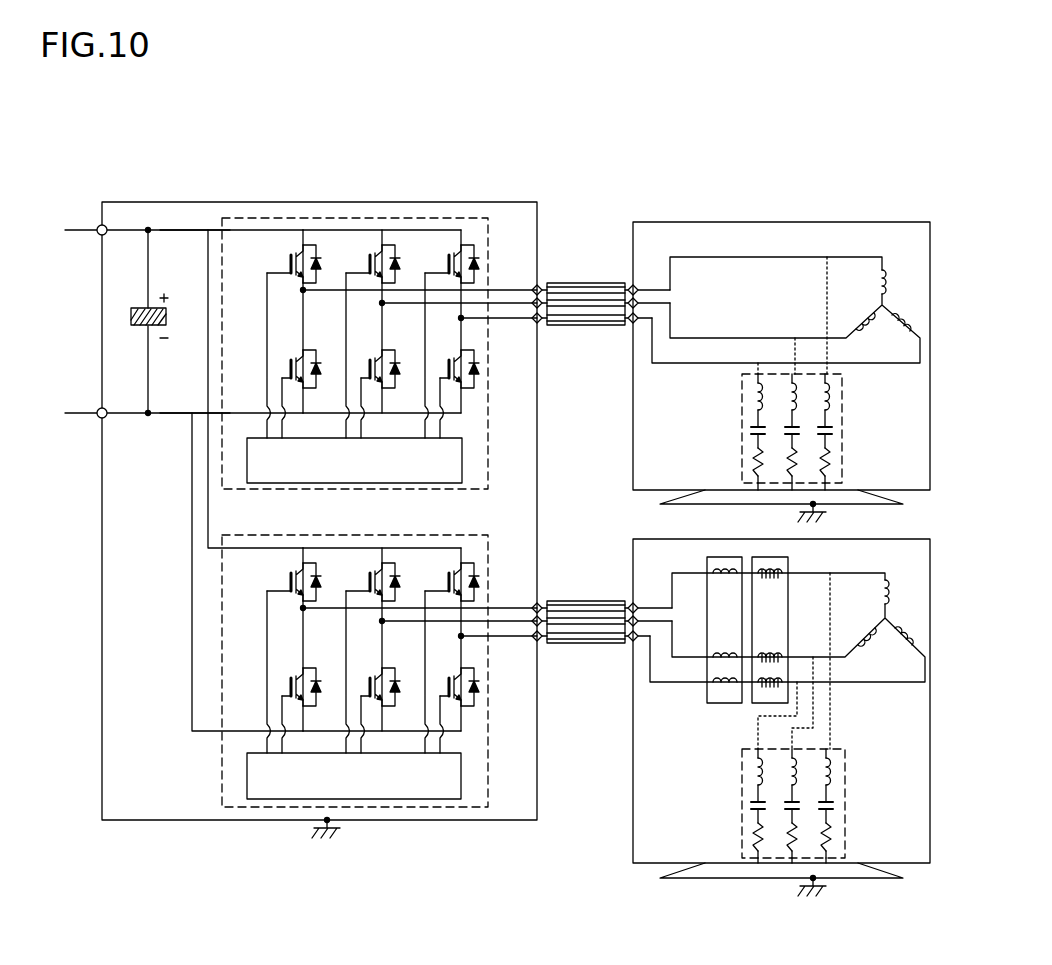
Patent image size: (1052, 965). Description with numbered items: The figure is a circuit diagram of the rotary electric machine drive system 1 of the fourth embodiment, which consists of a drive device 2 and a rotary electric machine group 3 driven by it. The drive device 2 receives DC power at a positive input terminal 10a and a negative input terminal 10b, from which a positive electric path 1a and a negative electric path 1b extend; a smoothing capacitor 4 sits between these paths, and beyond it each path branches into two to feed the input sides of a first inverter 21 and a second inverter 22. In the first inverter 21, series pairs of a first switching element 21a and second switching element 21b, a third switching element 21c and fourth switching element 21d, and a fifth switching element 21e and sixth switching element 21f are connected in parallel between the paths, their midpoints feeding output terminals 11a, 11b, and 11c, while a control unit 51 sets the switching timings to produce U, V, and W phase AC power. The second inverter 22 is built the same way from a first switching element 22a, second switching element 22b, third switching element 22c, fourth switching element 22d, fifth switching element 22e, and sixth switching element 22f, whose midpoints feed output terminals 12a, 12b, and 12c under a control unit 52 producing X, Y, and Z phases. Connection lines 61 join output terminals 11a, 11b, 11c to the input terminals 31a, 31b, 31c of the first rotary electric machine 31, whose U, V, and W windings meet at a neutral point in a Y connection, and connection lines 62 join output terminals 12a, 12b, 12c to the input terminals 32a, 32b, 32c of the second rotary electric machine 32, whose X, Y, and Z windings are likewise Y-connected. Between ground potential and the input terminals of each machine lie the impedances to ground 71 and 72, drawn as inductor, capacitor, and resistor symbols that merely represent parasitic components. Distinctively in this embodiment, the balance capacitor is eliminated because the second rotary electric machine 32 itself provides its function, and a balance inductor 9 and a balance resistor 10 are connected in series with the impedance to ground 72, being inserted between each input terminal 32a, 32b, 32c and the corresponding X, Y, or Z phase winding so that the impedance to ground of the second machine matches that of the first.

The rotary electric machine drive system 1 is at (625, 186).
The positive electric path 1a is at (195, 232).
The negative electric path 1b is at (176, 415).
The drive device 2 is at (494, 202).
The rotary electric machine group 3 is at (845, 221).
The smoothing capacitor 4 is at (145, 329).
The balance inductor 9 is at (712, 703).
The balance resistor 10 is at (757, 703).
The positive input terminal 10a is at (99, 226).
The negative input terminal 10b is at (99, 409).
The output terminal 11a is at (540, 286).
The output terminal 11b is at (537, 309).
The output terminal 11c is at (542, 323).
The output terminal 12a is at (540, 604).
The output terminal 12b is at (537, 627).
The output terminal 12c is at (542, 641).
The first inverter 21 is at (489, 256).
The first switching element 21a is at (299, 246).
The second switching element 21b is at (378, 246).
The third switching element 21c is at (458, 246).
The fourth switching element 21d is at (290, 372).
The fifth switching element 21e is at (370, 372).
The sixth switching element 21f is at (449, 372).
The second inverter 22 is at (489, 573).
The first switching element 22a is at (299, 564).
The second switching element 22b is at (378, 564).
The third switching element 22c is at (458, 564).
The fourth switching element 22d is at (290, 690).
The fifth switching element 22e is at (370, 690).
The sixth switching element 22f is at (449, 690).
The first rotary electric machine 31 is at (905, 222).
The input terminal 31a is at (636, 286).
The input terminal 31b is at (632, 323).
The input terminal 31c is at (672, 306).
The second rotary electric machine 32 is at (905, 539).
The input terminal 32a is at (636, 604).
The input terminal 32b is at (632, 641).
The input terminal 32c is at (638, 645).
The control unit 51 is at (463, 462).
The control unit 52 is at (462, 778).
The connection lines 61 is at (606, 283).
The connection lines 62 is at (606, 601).
The impedance to ground 71 is at (843, 440).
The impedance to ground 72 is at (845, 815).